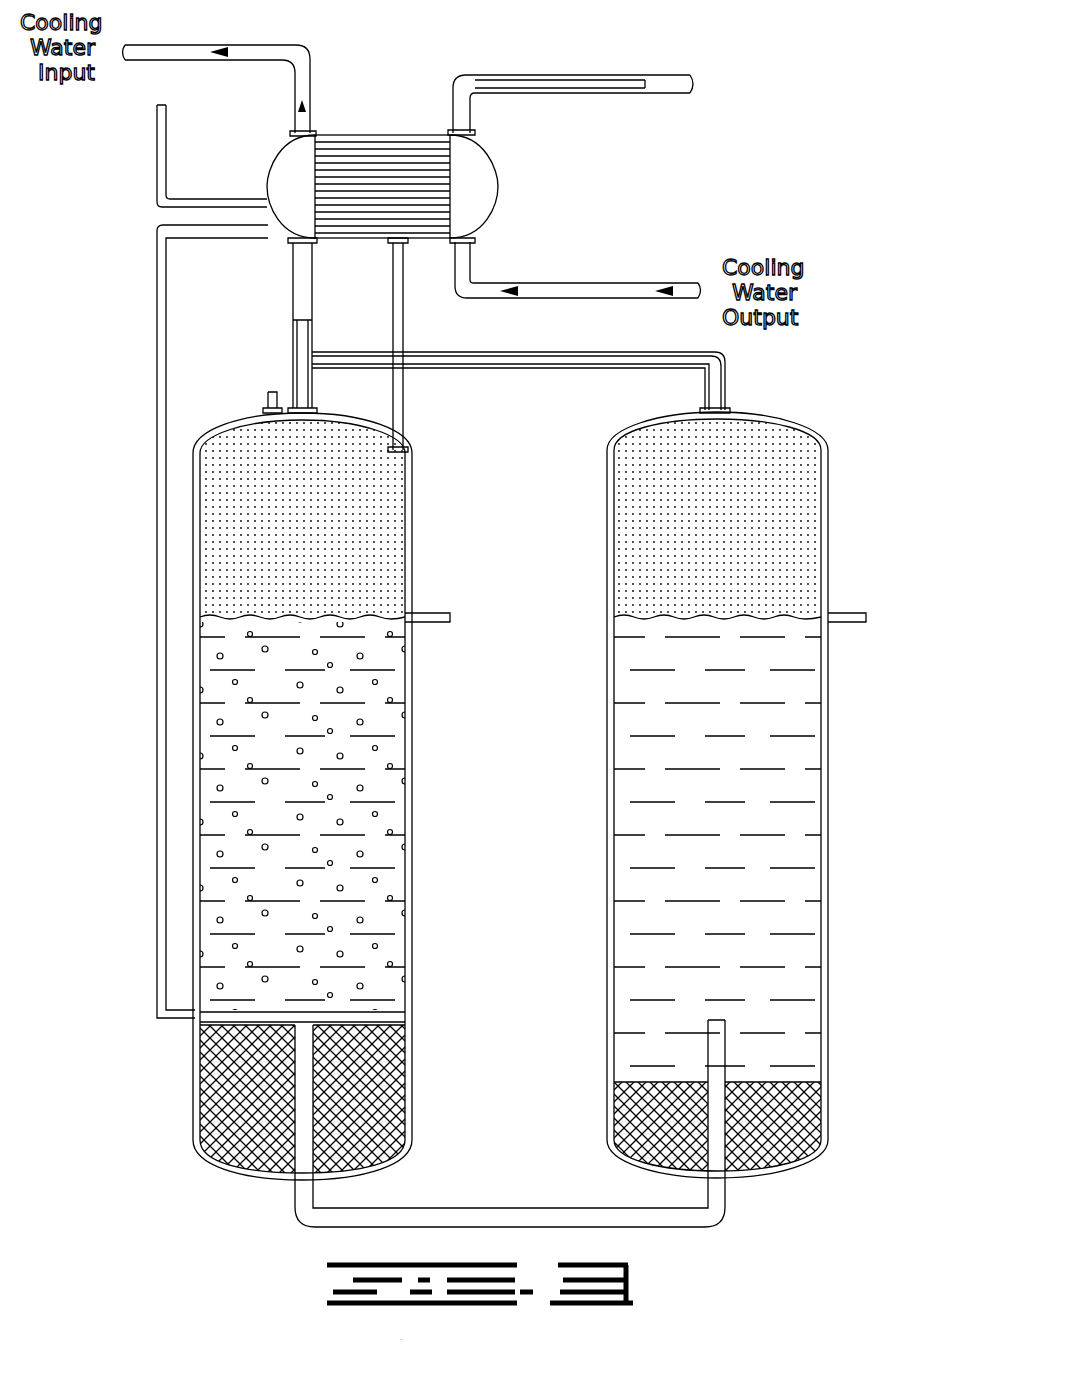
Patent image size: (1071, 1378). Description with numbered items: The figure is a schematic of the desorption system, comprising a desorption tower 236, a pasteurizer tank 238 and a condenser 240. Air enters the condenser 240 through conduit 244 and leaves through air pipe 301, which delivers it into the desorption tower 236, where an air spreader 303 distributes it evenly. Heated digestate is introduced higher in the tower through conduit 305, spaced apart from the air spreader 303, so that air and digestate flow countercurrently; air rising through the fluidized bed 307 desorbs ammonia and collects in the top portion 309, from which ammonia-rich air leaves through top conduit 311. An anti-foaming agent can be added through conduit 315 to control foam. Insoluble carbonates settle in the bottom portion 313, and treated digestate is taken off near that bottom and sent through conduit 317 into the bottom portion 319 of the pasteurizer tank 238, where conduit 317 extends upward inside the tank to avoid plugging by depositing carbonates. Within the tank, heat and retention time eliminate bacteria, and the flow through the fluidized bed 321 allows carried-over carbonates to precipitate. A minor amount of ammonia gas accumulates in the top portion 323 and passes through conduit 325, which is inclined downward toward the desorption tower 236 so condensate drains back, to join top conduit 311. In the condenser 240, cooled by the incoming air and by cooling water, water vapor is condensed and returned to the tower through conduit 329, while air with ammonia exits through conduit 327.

The conduit 244 is at (157, 158).
The desorption tower 236 is at (195, 707).
The condenser 240 is at (496, 175).
The conduit 327 is at (580, 75).
The top conduit 311 is at (293, 300).
The conduit 329 is at (403, 312).
The conduit 325 is at (527, 370).
The conduit 315 is at (268, 400).
The air pipe 301 is at (157, 593).
The top portion 309 is at (376, 520).
The conduit 305 is at (435, 615).
The fluidized bed 307 is at (378, 738).
The bottom portion 313 is at (412, 1085).
The air spreader 303 is at (195, 1057).
The conduit 317 is at (470, 1208).
The top portion 323 is at (828, 538).
The pasteurizer tank 238 is at (828, 725).
The fluidized bed 321 is at (790, 897).
The bottom portion 319 is at (828, 1115).